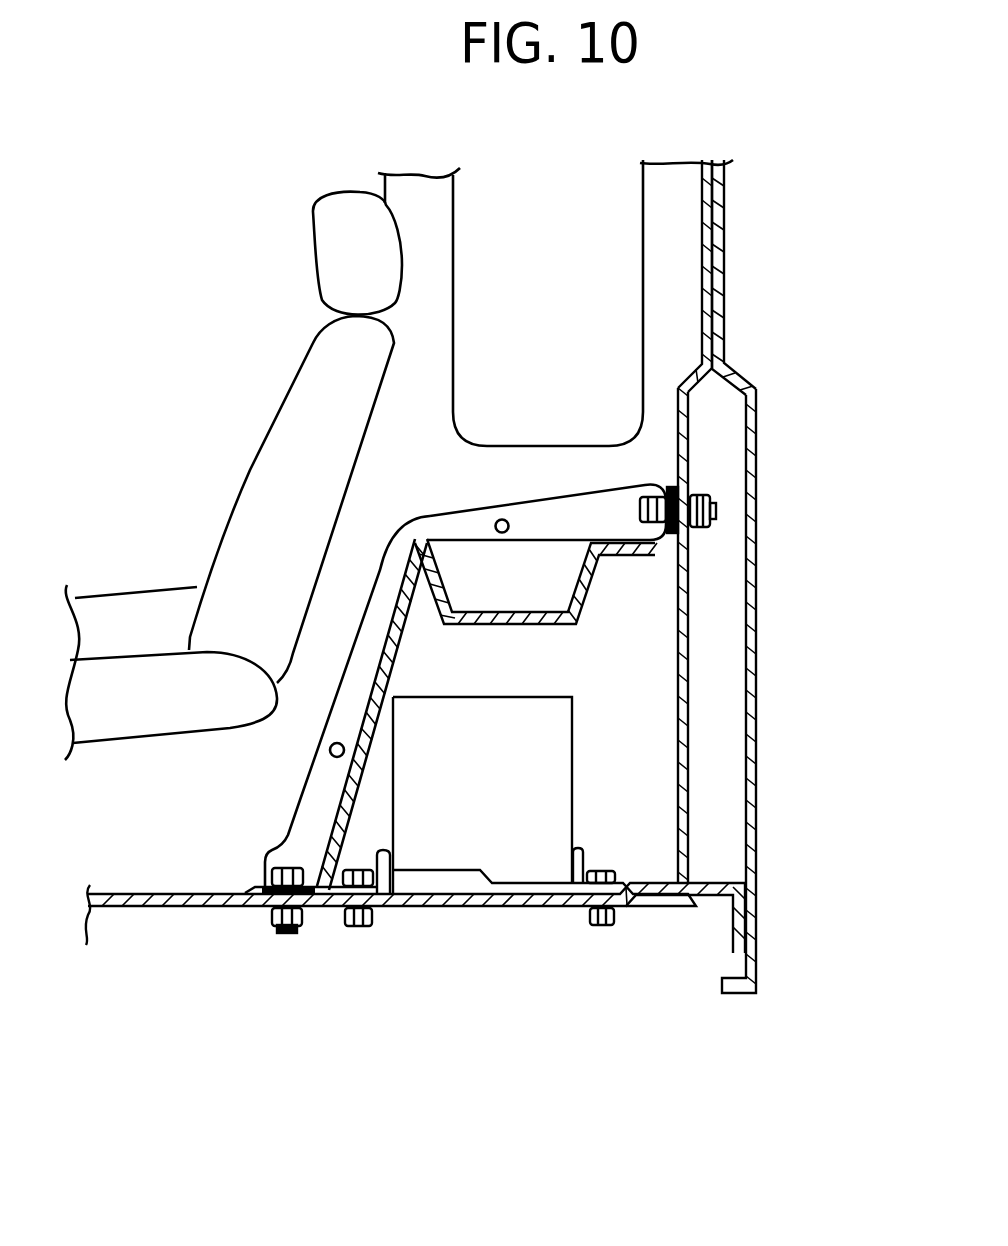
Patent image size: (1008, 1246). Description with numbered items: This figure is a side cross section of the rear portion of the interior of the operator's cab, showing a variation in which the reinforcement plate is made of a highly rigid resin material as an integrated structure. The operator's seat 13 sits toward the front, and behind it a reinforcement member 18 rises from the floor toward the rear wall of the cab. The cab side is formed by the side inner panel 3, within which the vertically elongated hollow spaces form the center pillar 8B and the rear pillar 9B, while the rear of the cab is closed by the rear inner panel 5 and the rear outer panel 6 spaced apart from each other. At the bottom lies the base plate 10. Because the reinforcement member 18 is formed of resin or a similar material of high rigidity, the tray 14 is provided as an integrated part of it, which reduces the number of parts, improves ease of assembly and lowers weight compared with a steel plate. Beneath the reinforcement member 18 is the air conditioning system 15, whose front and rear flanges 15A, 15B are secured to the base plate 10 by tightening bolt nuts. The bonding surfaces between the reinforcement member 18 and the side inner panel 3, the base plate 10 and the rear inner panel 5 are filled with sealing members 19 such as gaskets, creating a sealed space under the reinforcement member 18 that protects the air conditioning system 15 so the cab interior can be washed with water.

The side inner panel 3 is at (488, 470).
The rear inner panel 5 is at (683, 860).
The rear outer panel 6 is at (753, 807).
The center pillar 8B is at (430, 252).
The rear pillar 9B is at (677, 287).
The base plate 10 is at (442, 910).
The operator's seat 13 is at (273, 410).
The tray 14 is at (597, 590).
The air conditioning system 15 is at (497, 872).
The flange 15A is at (407, 910).
The flange 15B is at (620, 900).
The reinforcement member 18 is at (397, 655).
The sealing member 19 is at (667, 480).